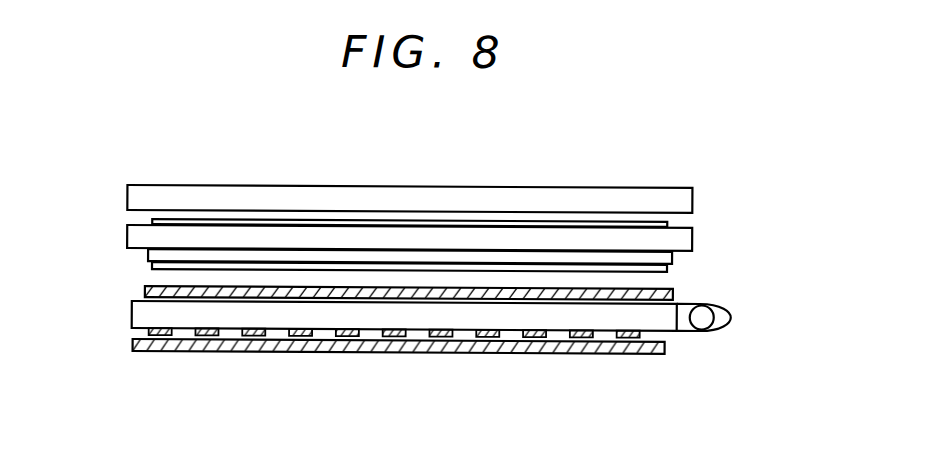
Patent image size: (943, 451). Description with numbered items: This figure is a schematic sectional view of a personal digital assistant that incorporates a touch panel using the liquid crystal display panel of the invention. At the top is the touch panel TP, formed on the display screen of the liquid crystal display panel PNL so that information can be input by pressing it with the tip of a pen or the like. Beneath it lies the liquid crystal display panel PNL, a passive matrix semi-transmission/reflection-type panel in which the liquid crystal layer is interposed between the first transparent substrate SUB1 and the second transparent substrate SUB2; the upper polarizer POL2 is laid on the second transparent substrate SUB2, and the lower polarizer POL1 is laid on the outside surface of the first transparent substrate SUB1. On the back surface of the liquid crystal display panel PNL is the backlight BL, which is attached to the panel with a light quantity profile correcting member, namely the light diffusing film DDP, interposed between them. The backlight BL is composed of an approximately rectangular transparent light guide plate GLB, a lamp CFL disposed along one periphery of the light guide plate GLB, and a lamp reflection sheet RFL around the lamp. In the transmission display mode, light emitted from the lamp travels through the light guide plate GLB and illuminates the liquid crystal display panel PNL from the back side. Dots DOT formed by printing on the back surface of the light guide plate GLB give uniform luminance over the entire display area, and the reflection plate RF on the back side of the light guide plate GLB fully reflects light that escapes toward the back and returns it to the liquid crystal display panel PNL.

The touch panel TP is at (619, 184).
The liquid crystal display panel PNL is at (418, 203).
The upper polarizer POL2 is at (229, 219).
The lower polarizer POL1 is at (298, 266).
The second transparent substrate SUB2 is at (127, 236).
The first transparent substrate SUB1 is at (148, 252).
The light diffusing film DDP is at (676, 288).
The backlight BL is at (420, 332).
The light guide plate GLB is at (282, 318).
The dots DOT is at (203, 336).
The reflection plate RF is at (422, 352).
The lamp reflection sheet RFL is at (730, 311).
The lamp CFL is at (705, 319).